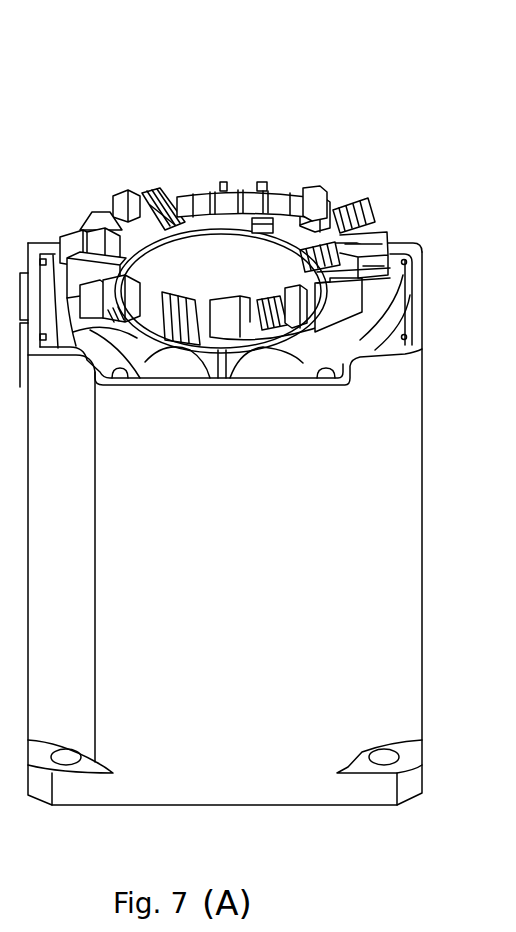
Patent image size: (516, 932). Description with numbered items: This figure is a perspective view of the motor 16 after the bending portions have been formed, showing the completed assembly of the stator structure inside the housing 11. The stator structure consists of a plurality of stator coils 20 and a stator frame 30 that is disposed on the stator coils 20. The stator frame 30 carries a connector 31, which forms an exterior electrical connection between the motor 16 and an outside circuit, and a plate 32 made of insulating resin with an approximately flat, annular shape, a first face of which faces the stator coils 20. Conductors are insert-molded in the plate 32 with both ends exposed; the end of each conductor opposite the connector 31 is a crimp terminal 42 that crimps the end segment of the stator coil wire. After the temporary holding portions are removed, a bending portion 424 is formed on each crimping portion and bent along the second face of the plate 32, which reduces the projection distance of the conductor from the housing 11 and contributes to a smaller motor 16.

The housing 11 is at (427, 712).
The motor 16 is at (450, 87).
The stator coils 20 is at (390, 275).
The stator frame 30 is at (253, 154).
The connector 31 is at (253, 170).
The plate 32 is at (390, 247).
The crimp terminal 42 is at (167, 187).
The bending portion 424 is at (312, 220).